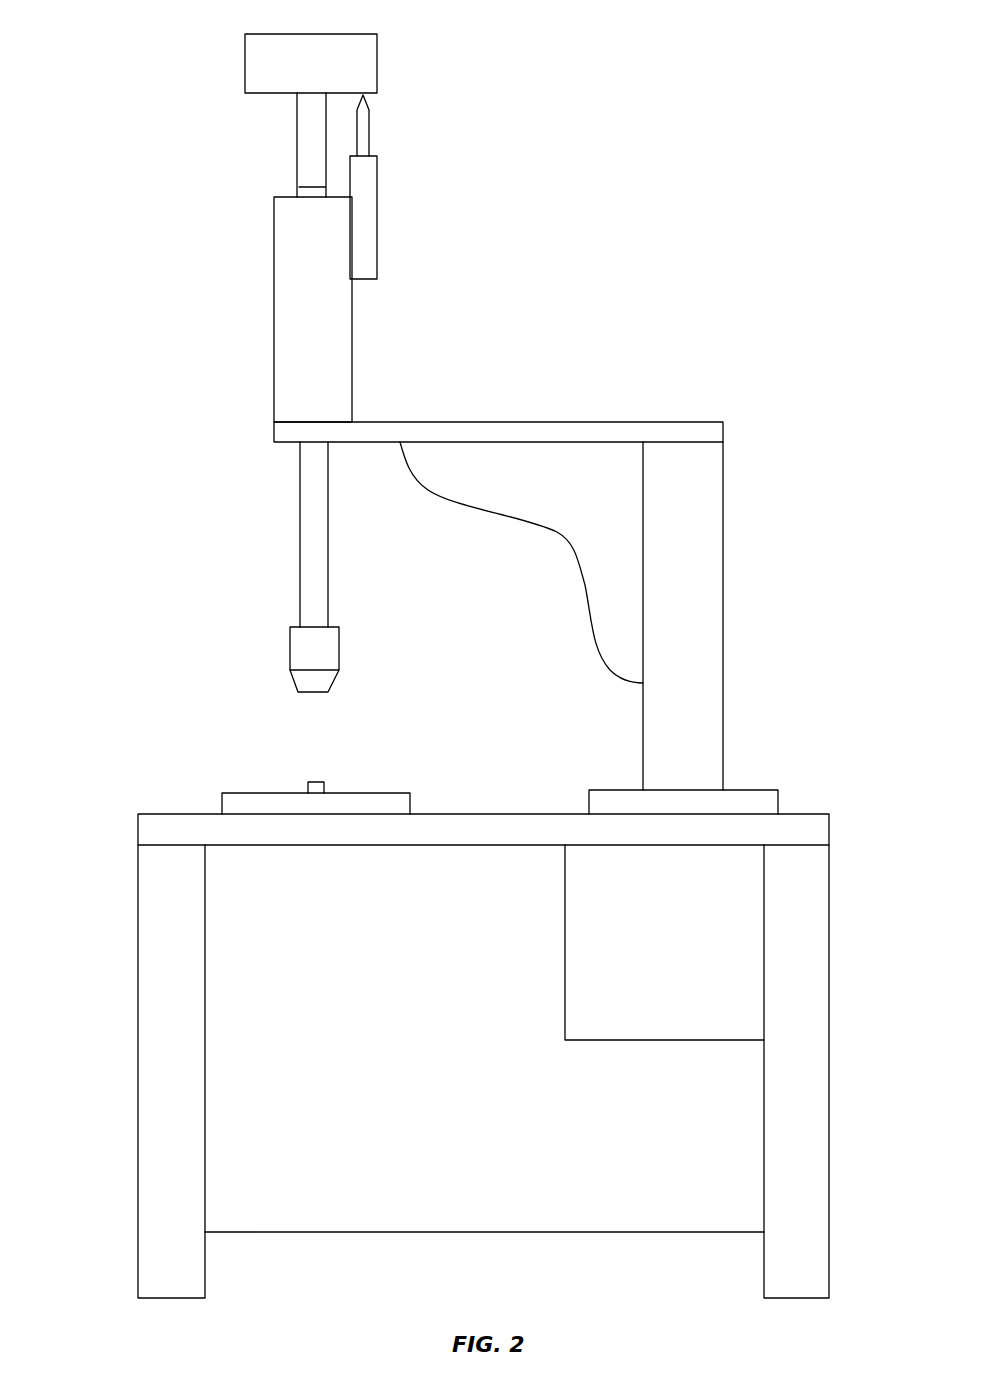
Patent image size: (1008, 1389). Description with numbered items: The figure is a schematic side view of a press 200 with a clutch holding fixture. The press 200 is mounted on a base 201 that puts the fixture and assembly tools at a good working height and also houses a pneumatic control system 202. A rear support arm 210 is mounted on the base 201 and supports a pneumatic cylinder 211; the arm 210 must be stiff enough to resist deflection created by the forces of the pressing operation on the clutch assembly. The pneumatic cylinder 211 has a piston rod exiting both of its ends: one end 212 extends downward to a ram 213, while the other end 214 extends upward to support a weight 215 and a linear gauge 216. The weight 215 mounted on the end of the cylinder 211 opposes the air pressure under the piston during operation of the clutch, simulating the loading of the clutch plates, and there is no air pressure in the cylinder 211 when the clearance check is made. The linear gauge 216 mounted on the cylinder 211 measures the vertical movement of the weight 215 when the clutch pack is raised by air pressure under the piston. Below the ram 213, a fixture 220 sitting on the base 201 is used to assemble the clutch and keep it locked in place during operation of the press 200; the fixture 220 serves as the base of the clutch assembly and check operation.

The press 200 is at (663, 166).
The base 201 is at (141, 1073).
The pneumatic control system 202 is at (688, 955).
The rear support arm 210 is at (557, 422).
The pneumatic cylinder 211 is at (274, 311).
The piston rod end 212 is at (300, 535).
The ram 213 is at (290, 648).
The piston rod end 214 is at (297, 140).
The weight 215 is at (378, 63).
The linear gauge 216 is at (377, 217).
The fixture 220 is at (372, 793).